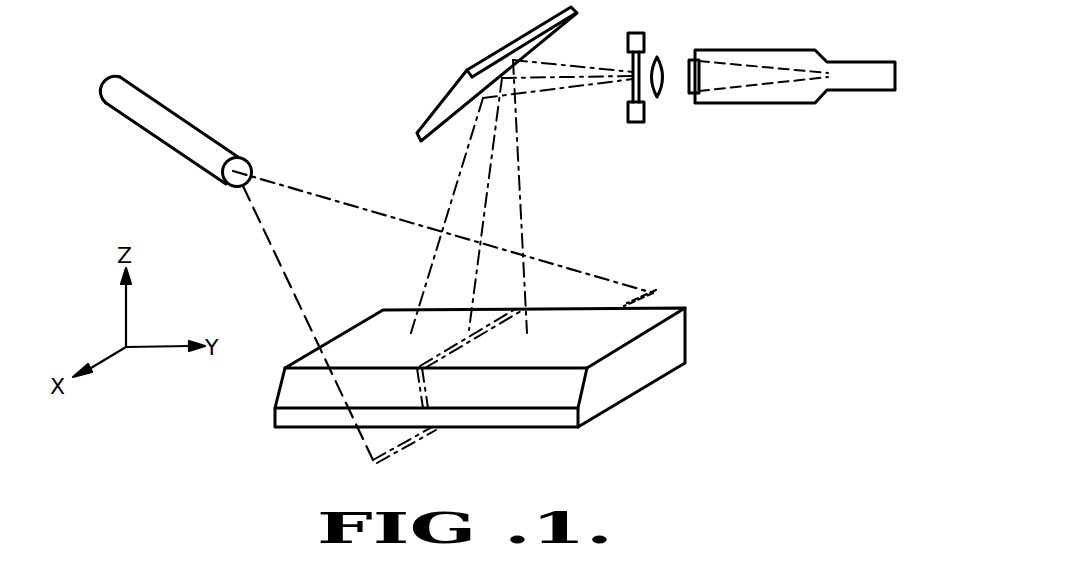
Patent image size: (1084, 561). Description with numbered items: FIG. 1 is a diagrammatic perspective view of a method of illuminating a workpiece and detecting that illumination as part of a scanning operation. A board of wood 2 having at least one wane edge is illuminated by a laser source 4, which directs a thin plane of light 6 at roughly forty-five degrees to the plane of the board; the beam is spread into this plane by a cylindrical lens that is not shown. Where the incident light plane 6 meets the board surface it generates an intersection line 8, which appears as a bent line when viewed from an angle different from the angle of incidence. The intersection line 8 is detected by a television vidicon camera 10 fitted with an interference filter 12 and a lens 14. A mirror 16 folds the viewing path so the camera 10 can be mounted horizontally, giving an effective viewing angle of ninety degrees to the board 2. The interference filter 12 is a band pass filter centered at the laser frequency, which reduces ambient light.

The board of wood 2 is at (682, 345).
The laser source 4 is at (198, 132).
The thin plane of light 6 is at (326, 194).
The intersection line 8 is at (460, 340).
The television vidicon camera 10 is at (762, 50).
The interference filter 12 is at (635, 33).
The lens 14 is at (659, 57).
The mirror 16 is at (488, 62).